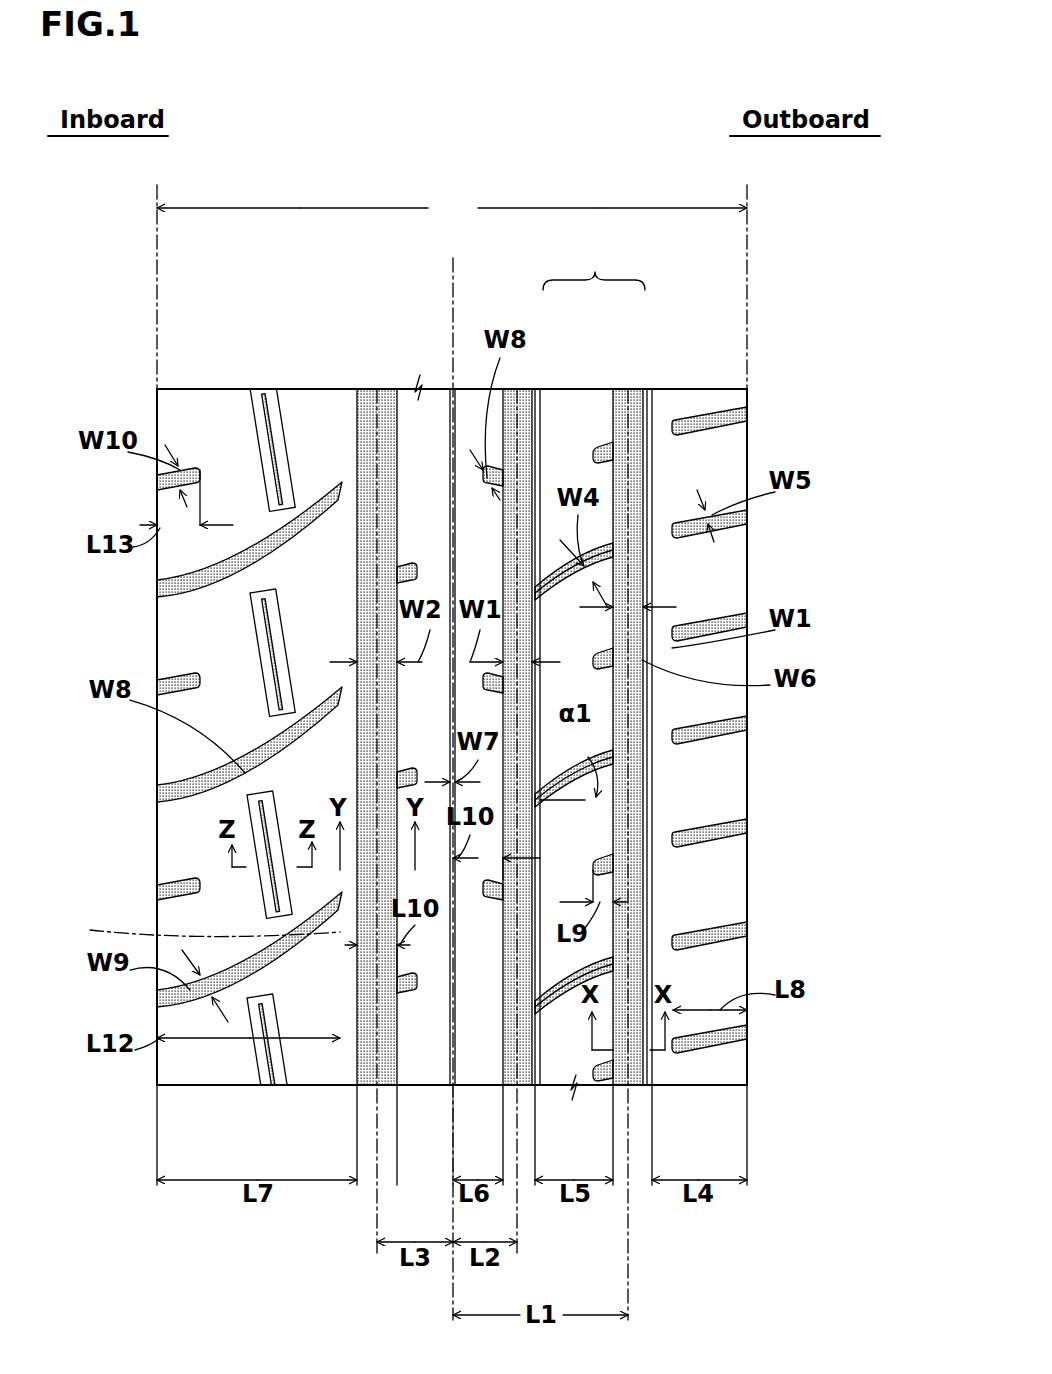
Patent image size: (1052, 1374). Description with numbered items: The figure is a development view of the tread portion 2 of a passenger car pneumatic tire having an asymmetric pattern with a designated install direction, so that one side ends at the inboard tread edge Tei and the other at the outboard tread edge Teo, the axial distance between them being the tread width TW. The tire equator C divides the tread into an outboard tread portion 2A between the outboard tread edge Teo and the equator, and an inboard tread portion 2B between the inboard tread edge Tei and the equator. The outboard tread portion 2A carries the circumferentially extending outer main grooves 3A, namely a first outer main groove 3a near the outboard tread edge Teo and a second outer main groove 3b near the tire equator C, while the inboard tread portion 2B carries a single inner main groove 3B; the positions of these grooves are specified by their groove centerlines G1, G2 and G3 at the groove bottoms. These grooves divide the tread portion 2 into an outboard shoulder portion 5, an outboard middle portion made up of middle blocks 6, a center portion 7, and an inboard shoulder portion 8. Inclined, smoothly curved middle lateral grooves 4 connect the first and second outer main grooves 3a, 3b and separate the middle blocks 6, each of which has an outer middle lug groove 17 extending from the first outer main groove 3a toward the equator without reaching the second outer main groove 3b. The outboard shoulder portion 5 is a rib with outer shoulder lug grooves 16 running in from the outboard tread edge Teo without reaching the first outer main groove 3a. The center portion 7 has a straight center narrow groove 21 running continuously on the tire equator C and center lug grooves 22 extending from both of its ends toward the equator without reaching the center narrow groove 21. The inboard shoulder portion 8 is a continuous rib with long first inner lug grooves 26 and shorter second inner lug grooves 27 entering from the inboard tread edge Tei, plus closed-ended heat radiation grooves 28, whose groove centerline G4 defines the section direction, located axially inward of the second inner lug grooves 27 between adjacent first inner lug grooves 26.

The tread portion 2 is at (772, 288).
The outboard tread portion 2A is at (664, 310).
The inboard tread portion 2B is at (288, 312).
The outer main groove 3A is at (594, 264).
The inner main groove 3B is at (378, 400).
The first outer main groove 3a is at (628, 415).
The second outer main groove 3b is at (520, 420).
The middle lateral groove 4 is at (645, 590).
The outboard shoulder portion 5 is at (668, 400).
The middle block 6 is at (570, 420).
The center portion 7 is at (472, 415).
The inboard shoulder portion 8 is at (218, 420).
The outer shoulder lug groove 16 is at (710, 832).
The outer middle lug groove 17 is at (605, 865).
The center narrow groove 21 is at (446, 1085).
The center lug groove 22 is at (402, 990).
The first inner lug groove 26 is at (215, 775).
The second inner lug groove 27 is at (195, 887).
The heat radiation groove 28 is at (262, 808).
The tire equator C is at (452, 775).
The tread width TW is at (452, 209).
The inboard tread edge Tei is at (150, 420).
The outboard tread edge Teo is at (755, 420).
The groove centerline G1 is at (628, 1205).
The groove centerline G2 is at (517, 1205).
The groove centerline G3 is at (377, 1205).
The groove centerline G4 is at (196, 923).